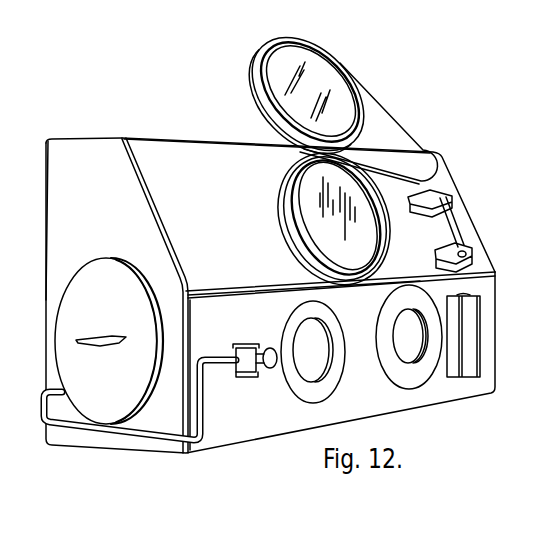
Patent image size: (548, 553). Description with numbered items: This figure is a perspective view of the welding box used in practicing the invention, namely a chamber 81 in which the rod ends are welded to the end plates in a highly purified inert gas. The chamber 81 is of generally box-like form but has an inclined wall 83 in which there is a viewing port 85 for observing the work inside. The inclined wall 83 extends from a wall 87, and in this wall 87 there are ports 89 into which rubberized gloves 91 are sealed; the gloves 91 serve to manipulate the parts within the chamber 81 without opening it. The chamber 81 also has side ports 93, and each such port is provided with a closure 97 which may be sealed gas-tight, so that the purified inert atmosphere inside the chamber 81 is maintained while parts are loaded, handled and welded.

The chamber 81 is at (104, 219).
The inclined wall 83 is at (204, 220).
The viewing port 85 is at (322, 222).
The wall 87 is at (235, 330).
The ports 89 is at (308, 370).
The rubberized gloves 91 is at (405, 328).
The side ports 93 is at (145, 400).
The closure 97 is at (91, 267).